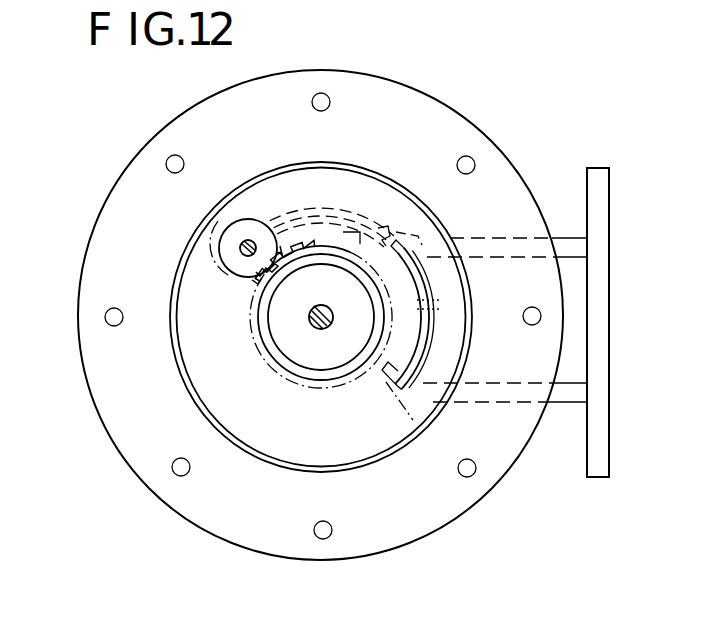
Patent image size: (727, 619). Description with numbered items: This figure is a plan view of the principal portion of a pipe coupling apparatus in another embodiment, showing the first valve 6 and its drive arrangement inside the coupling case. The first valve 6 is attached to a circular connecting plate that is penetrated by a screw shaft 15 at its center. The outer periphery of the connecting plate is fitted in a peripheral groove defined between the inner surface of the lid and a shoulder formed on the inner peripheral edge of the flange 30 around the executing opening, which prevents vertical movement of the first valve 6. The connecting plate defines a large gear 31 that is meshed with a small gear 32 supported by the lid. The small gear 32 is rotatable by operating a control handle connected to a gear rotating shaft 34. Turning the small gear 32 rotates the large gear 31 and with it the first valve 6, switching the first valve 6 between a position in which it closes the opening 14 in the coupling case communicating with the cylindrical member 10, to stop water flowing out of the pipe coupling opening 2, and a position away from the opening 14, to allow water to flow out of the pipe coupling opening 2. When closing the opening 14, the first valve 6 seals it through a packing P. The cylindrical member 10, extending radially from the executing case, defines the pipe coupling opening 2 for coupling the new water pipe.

The pipe coupling opening 2 is at (575, 300).
The first valve 6 is at (357, 418).
The cylindrical member 10 is at (563, 403).
The opening 14 is at (440, 357).
The screw shaft 15 is at (316, 326).
The flange 30 is at (113, 232).
The large gear 31 is at (265, 308).
The small gear 32 is at (242, 270).
The gear rotating shaft 34 is at (247, 243).
The packing P is at (352, 300).